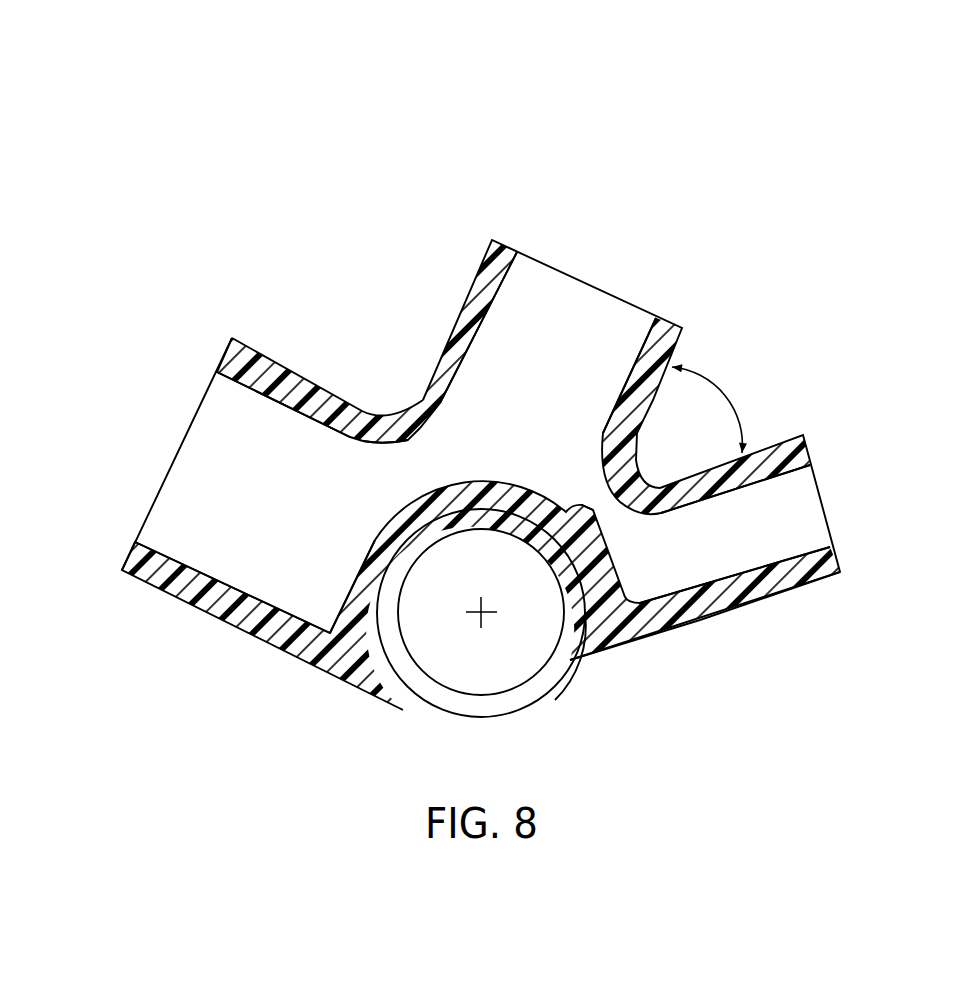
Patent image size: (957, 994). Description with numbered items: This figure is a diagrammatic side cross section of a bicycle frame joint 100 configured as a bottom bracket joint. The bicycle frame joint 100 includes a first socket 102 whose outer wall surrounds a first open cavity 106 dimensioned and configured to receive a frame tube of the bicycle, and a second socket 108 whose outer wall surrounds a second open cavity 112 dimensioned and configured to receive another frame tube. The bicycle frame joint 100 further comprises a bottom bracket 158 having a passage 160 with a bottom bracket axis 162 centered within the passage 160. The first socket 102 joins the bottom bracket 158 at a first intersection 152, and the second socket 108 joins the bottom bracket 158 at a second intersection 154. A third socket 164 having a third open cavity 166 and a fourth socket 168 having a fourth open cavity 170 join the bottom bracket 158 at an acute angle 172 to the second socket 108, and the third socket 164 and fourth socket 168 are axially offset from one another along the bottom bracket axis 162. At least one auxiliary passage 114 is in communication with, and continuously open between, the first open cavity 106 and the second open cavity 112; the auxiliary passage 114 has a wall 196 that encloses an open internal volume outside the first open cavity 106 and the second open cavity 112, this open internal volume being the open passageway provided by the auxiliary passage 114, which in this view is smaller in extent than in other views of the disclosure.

The bicycle frame joint 100 is at (373, 170).
The first socket 102 is at (181, 392).
The first open cavity 106 is at (271, 507).
The second socket 108 is at (591, 218).
The second open cavity 112 is at (573, 351).
The auxiliary passage 114 is at (447, 474).
The first intersection 152 is at (328, 574).
The second intersection 154 is at (628, 550).
The bottom bracket 158 is at (585, 740).
The passage 160 is at (443, 690).
The bottom bracket axis 162 is at (483, 617).
The third socket 164 is at (850, 509).
The third open cavity 166 is at (794, 532).
The fourth socket 168 is at (827, 609).
The fourth open cavity 170 is at (793, 652).
The acute angle 172 is at (727, 390).
The wall 196 is at (370, 437).